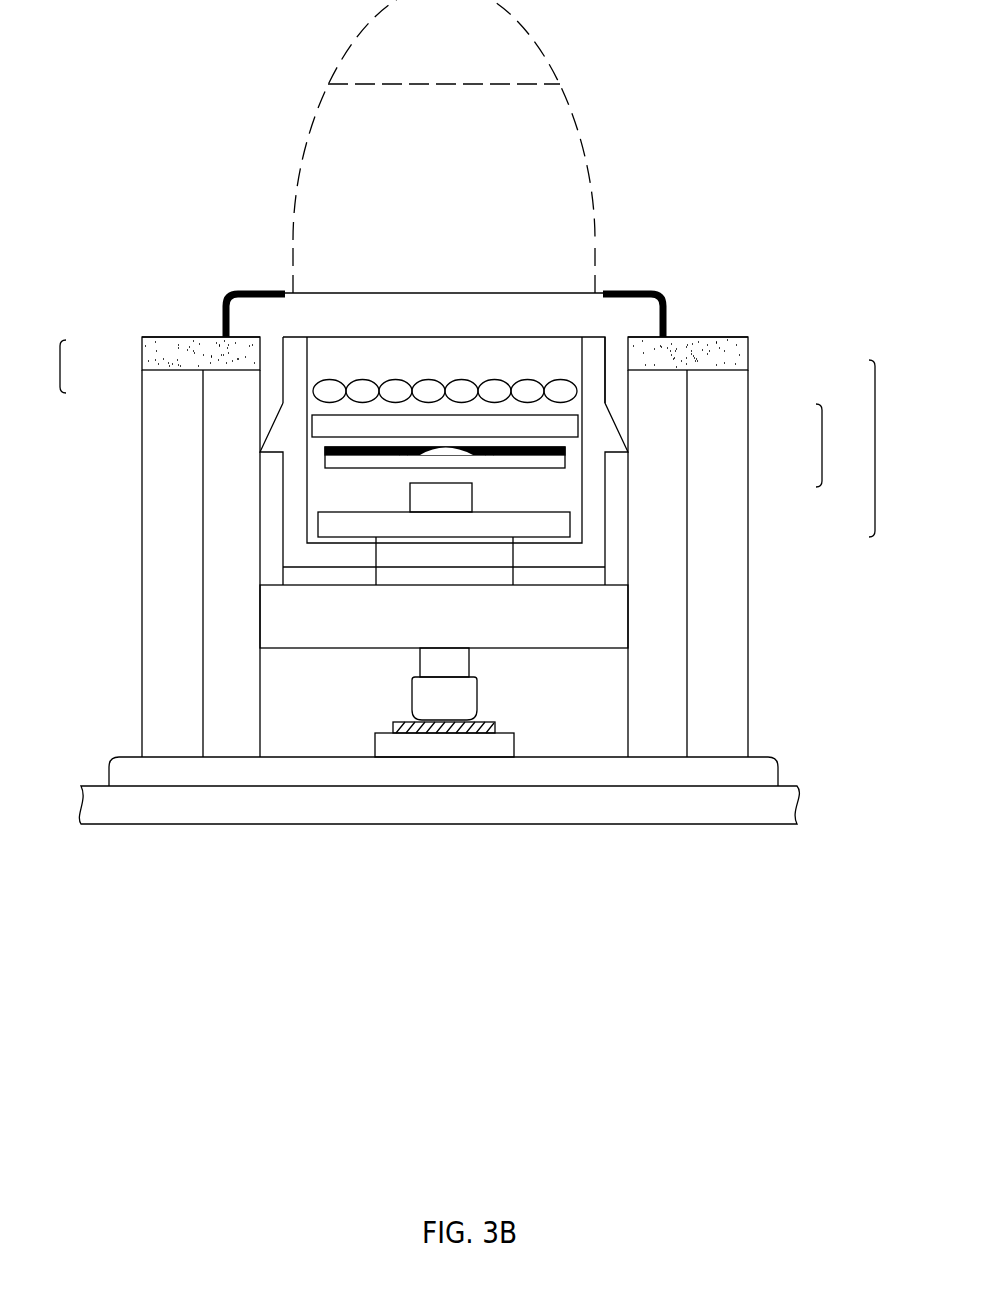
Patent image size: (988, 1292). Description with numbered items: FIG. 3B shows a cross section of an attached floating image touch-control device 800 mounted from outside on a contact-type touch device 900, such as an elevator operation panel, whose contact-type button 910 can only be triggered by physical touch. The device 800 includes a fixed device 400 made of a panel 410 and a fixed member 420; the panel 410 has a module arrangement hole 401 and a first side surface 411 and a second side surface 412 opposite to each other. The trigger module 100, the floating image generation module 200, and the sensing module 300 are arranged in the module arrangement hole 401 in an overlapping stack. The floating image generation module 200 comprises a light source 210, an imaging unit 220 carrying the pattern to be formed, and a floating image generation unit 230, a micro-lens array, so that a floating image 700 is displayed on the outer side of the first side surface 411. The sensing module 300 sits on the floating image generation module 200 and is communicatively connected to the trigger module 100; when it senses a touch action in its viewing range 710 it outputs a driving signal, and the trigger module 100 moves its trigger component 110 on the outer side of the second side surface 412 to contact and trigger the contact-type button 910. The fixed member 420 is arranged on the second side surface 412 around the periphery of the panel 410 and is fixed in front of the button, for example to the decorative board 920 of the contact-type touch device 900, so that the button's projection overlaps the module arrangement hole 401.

The floating image 700 is at (524, 84).
The viewing range 710 is at (572, 107).
The module arrangement hole 401 is at (263, 347).
The first side surface 411 is at (212, 335).
The fixed device 400 is at (404, 512).
The panel 410 is at (147, 353).
The fixed member 420 is at (155, 389).
The second side surface 412 is at (227, 373).
The sensing module 300 is at (647, 313).
The floating image generation unit 230 is at (570, 393).
The imaging unit 220 is at (568, 427).
The light source 210 is at (470, 498).
The floating image generation module 200 is at (590, 446).
The attached floating image touch-control device 800 is at (575, 470).
The trigger module 100 is at (607, 610).
The trigger component 110 is at (460, 702).
The contact-type button 910 is at (493, 720).
The decorative board 920 is at (758, 765).
The contact-type touch device 900 is at (829, 791).